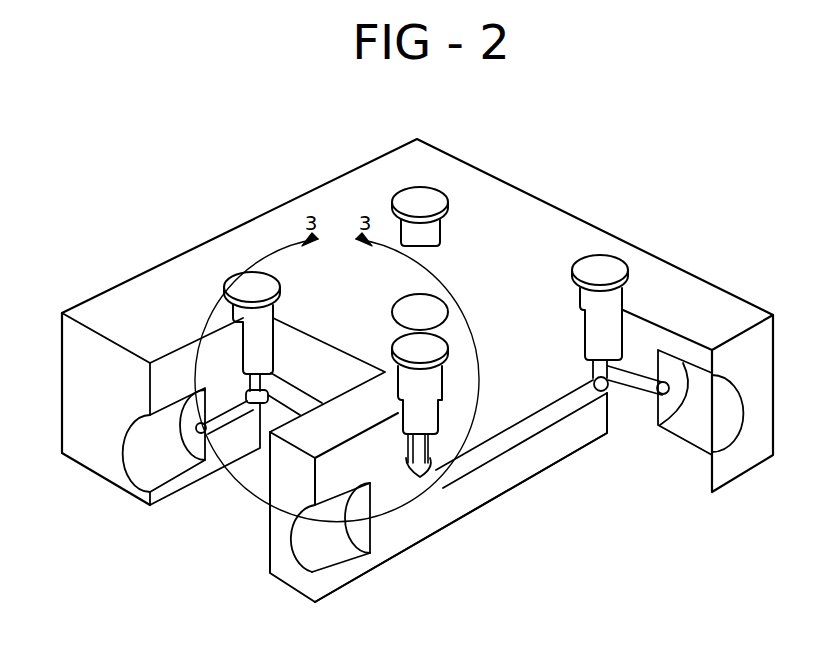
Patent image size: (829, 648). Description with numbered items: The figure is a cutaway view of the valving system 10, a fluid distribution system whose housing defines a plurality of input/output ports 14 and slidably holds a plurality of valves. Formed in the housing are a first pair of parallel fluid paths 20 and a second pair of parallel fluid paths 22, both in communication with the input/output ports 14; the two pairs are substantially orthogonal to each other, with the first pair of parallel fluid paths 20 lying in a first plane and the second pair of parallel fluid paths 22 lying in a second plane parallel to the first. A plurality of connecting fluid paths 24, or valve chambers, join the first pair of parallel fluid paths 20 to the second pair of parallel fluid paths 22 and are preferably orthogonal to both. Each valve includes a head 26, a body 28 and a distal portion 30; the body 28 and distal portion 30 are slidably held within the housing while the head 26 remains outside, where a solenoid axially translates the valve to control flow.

The valving system 10 is at (603, 203).
The input/output ports 14 is at (147, 466).
The first pair of parallel fluid paths 20 is at (247, 455).
The second pair of parallel fluid paths 22 is at (300, 382).
The connecting fluid paths 24 is at (460, 515).
The head 26 is at (573, 267).
The body 28 is at (587, 338).
The distal portion 30 is at (595, 383).